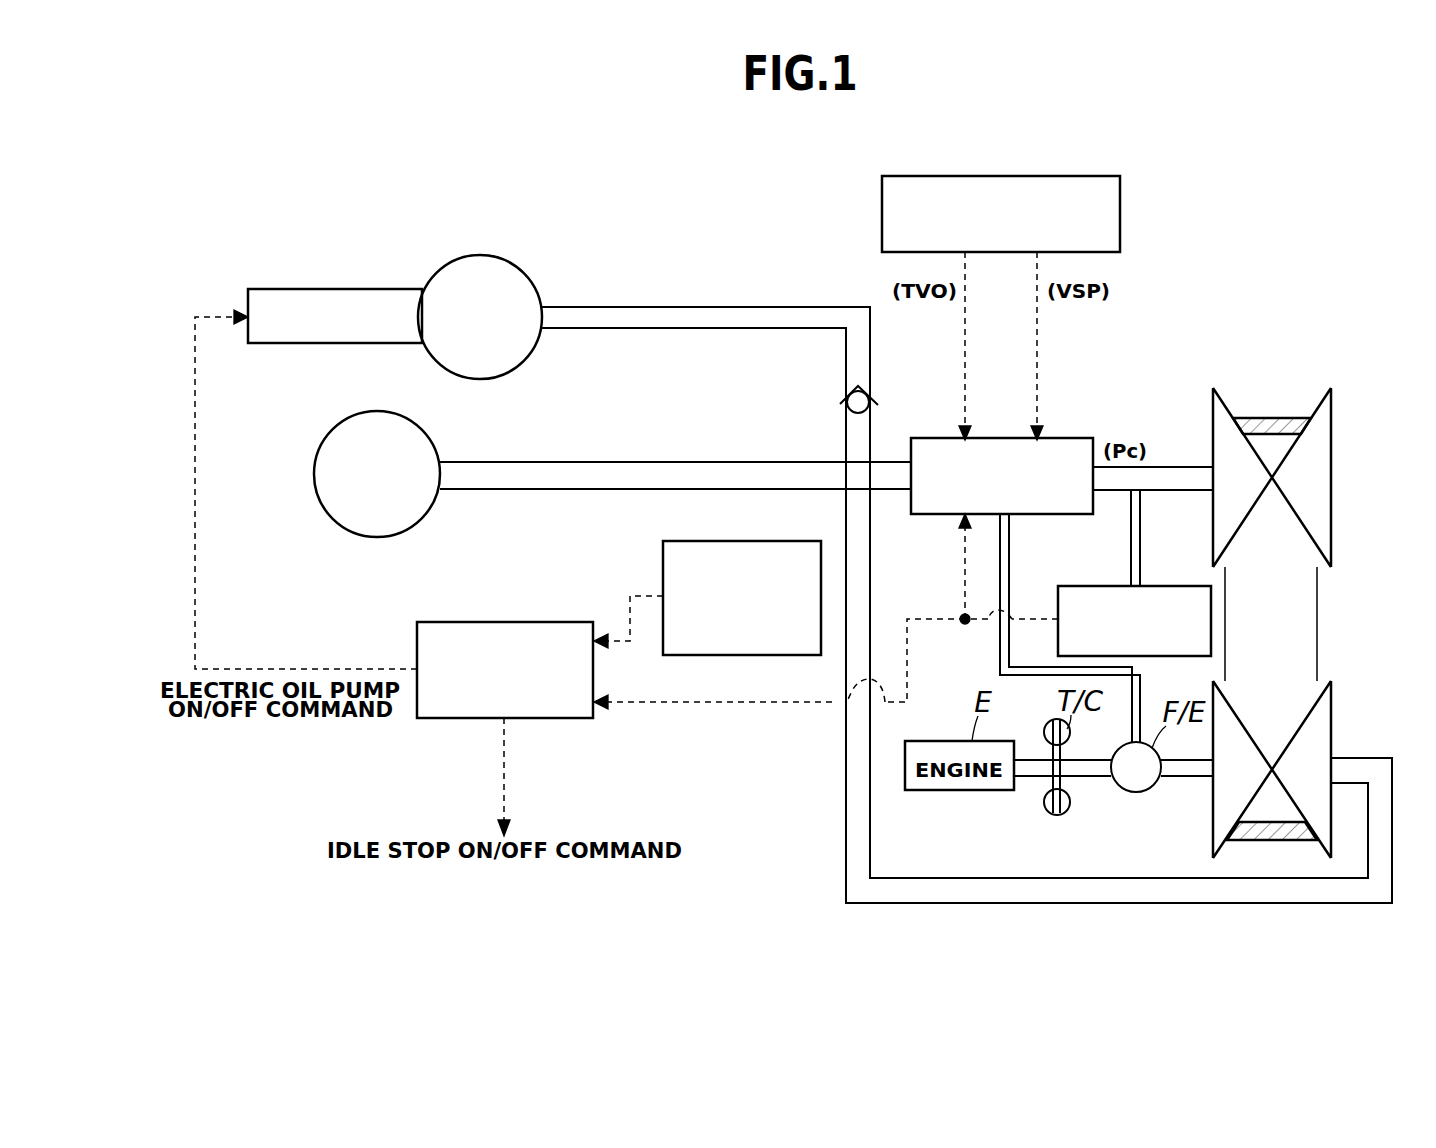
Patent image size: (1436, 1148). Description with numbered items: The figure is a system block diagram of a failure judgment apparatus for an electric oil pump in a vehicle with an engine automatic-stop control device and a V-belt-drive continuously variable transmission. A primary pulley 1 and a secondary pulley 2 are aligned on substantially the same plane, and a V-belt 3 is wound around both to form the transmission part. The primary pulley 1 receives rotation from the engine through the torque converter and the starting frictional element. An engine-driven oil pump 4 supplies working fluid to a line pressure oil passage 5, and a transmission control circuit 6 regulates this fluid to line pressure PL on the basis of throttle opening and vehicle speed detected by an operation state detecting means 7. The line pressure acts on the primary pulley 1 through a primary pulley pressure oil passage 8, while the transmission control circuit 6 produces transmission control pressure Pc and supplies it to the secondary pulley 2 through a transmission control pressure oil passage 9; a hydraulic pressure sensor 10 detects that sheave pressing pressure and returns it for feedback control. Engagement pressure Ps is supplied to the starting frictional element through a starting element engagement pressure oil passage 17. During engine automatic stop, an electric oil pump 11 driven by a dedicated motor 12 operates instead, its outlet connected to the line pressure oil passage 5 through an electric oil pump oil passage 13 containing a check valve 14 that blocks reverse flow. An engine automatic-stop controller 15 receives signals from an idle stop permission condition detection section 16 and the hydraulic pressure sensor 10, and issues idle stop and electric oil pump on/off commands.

The primary pulley 1 is at (1333, 719).
The secondary pulley 2 is at (1333, 456).
The V-belt 3 is at (1281, 418).
The engine-driven oil pump 4 is at (378, 411).
The line pressure oil passage 5 is at (643, 462).
The transmission control circuit 6 is at (950, 438).
The operation state detecting means 7 is at (1067, 176).
The primary pulley pressure oil passage 8 is at (846, 828).
The transmission control pressure oil passage 9 is at (1104, 492).
The hydraulic pressure sensor 10 is at (1180, 586).
The electric oil pump 11 is at (482, 255).
The dedicated motor 12 is at (316, 289).
The electric oil pump oil passage 13 is at (704, 307).
The check valve 14 is at (849, 402).
The engine automatic-stop controller 15 is at (508, 622).
The idle stop permission condition detection section 16 is at (742, 541).
The starting element engagement pressure oil passage 17 is at (1000, 657).